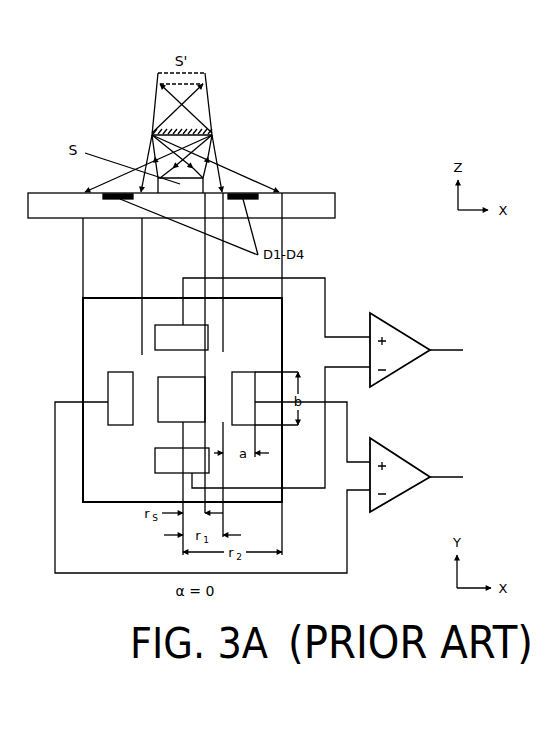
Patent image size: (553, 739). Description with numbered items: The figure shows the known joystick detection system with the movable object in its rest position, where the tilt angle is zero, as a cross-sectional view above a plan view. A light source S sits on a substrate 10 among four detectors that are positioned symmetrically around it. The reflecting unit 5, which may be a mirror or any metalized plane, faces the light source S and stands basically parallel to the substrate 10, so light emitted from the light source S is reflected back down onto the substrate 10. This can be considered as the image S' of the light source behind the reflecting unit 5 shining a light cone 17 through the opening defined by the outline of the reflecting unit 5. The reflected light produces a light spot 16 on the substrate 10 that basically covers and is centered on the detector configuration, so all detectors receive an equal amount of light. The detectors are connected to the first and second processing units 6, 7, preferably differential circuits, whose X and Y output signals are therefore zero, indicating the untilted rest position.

The reflecting unit 5 is at (152, 130).
The light cone 17 is at (232, 168).
The substrate 10 is at (303, 203).
The light spot 16 is at (107, 328).
The first processing unit 6 is at (400, 343).
The second processing unit 7 is at (400, 470).